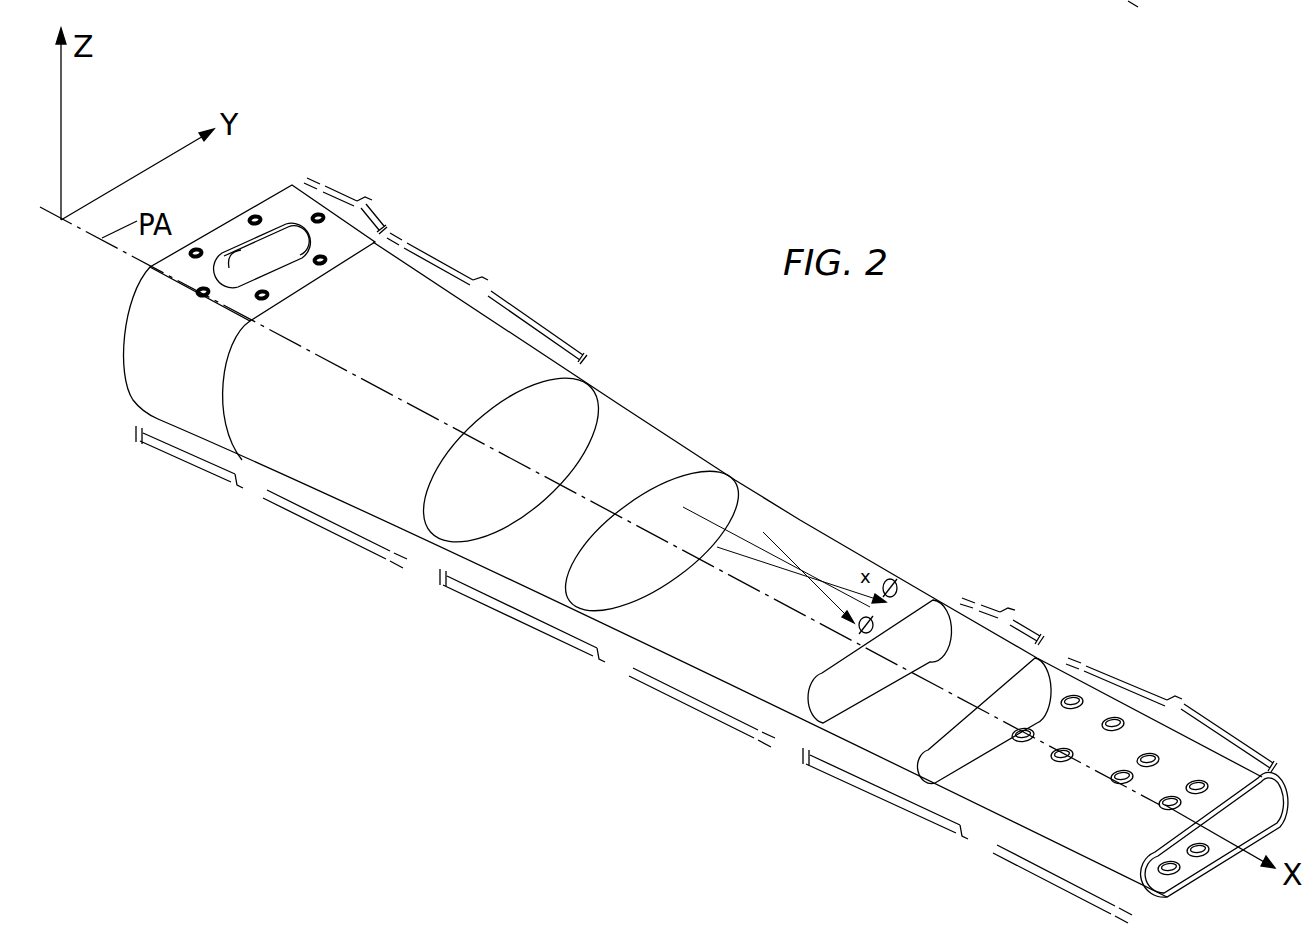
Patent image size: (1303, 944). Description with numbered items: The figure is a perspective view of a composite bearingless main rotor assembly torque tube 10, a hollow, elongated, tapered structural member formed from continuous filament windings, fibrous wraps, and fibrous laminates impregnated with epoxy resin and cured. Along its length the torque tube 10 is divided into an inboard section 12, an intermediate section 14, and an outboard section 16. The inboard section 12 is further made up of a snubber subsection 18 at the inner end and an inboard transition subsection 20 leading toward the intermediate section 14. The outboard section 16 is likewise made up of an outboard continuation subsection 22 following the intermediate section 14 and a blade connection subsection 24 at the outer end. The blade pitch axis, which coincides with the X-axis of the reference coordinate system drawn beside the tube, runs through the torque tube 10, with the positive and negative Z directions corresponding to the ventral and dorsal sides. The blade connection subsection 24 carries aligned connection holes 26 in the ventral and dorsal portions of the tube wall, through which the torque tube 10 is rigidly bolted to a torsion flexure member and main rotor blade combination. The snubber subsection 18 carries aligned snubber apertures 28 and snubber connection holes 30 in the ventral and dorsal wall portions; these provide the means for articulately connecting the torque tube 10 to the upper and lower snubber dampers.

The composite BMR torque tube 10 is at (295, 633).
The inboard section 12 is at (271, 497).
The intermediate section 14 is at (607, 658).
The outboard section 16 is at (967, 835).
The snubber subsection 18 is at (347, 205).
The inboard transition subsection 20 is at (487, 298).
The outboard continuation subsection 22 is at (1002, 614).
The blade connection subsection 24 is at (1171, 715).
The connection holes 26 is at (1178, 872).
The snubber apertures 28 is at (212, 268).
The snubber connection holes 30 is at (257, 297).